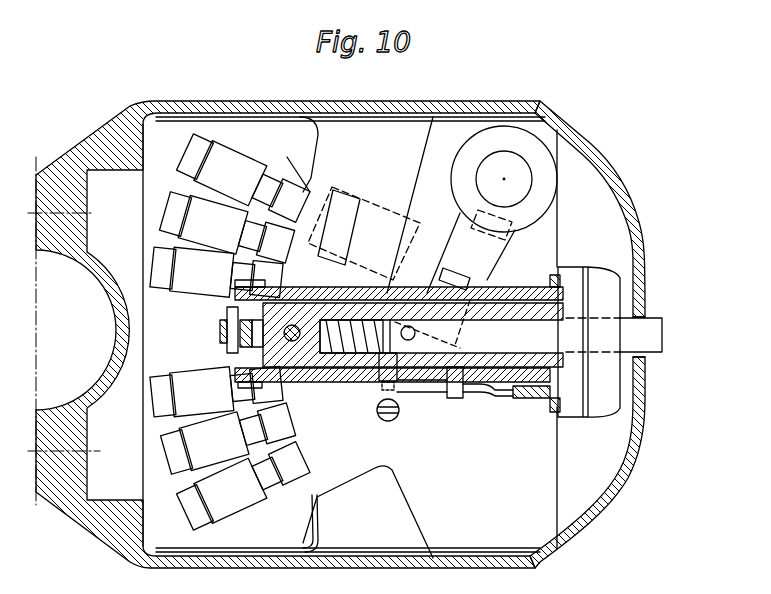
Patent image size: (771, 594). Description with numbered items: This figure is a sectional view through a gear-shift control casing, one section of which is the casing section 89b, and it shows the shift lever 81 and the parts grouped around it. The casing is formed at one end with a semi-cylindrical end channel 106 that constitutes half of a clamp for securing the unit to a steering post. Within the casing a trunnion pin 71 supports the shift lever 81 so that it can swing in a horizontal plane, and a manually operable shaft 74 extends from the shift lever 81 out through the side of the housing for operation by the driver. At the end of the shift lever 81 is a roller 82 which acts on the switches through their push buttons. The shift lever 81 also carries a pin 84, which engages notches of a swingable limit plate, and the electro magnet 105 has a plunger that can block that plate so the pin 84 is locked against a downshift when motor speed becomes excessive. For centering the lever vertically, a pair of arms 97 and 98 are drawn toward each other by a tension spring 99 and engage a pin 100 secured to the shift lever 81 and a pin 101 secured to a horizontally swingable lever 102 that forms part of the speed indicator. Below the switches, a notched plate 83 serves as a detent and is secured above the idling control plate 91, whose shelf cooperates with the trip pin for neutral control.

The trunnion pin 71 is at (605, 287).
The manually operable shaft 74 is at (650, 337).
The shift lever 81 is at (345, 355).
The roller 82 is at (228, 335).
The notched plate 83 is at (287, 157).
The pin 84 is at (292, 342).
The casing section 89b is at (588, 503).
The plate 91 is at (288, 462).
The arm 97 is at (503, 393).
The arm 98 is at (533, 398).
The tension spring 99 is at (397, 418).
The pin 100 is at (378, 392).
The pin 101 is at (457, 393).
The horizontally swingable lever 102 is at (427, 381).
The electro magnet 105 is at (527, 148).
The semi-cylindrical end channel 106 is at (68, 503).